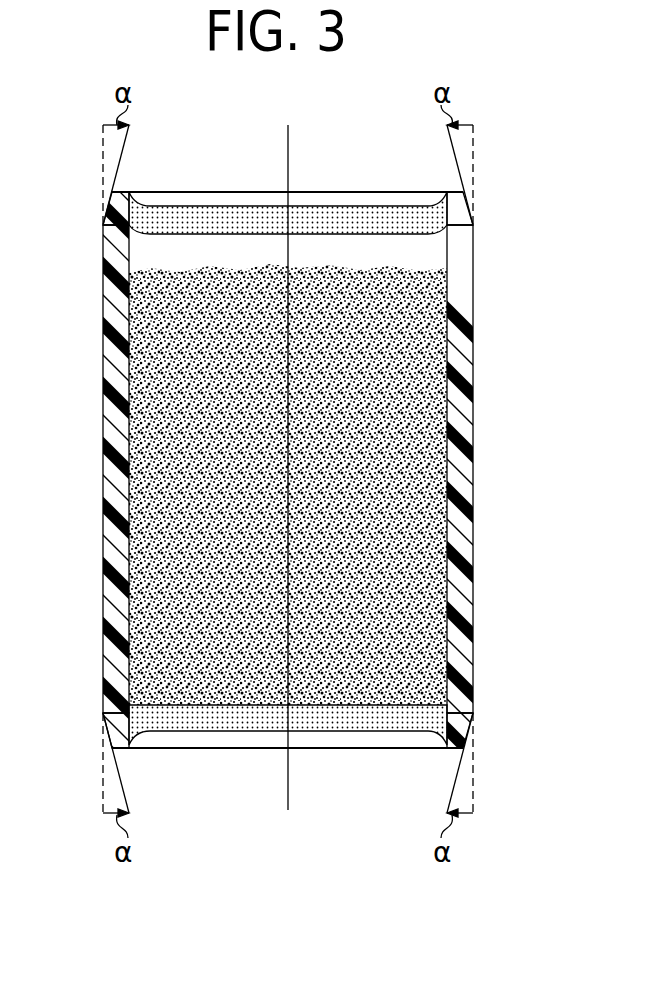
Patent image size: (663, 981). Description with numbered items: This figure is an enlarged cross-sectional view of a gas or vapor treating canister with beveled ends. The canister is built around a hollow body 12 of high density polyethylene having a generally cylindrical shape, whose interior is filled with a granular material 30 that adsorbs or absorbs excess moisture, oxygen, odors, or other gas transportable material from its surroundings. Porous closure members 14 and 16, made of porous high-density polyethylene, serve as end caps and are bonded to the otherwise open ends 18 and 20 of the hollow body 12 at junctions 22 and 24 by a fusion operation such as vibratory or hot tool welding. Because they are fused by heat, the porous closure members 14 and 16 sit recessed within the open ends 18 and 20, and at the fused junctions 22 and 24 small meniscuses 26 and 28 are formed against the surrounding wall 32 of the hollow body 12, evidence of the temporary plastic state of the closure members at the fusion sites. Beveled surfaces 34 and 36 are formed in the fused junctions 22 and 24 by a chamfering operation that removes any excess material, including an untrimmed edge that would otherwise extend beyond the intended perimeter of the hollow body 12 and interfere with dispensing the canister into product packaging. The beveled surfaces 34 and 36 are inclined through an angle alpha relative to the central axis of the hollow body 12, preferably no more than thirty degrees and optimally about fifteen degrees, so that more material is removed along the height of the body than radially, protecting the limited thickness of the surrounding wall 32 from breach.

The hollow body 12 is at (292, 490).
The porous closure member 14 is at (352, 226).
The porous closure member 16 is at (208, 720).
The open end 18 is at (348, 192).
The open end 20 is at (312, 748).
The junction 22 is at (103, 221).
The junction 24 is at (475, 717).
The meniscus 26 is at (133, 192).
The meniscus 28 is at (438, 742).
The granular material 30 is at (122, 330).
The surrounding wall 32 is at (112, 472).
The beveled surface 34 is at (106, 203).
The beveled surface 36 is at (104, 740).